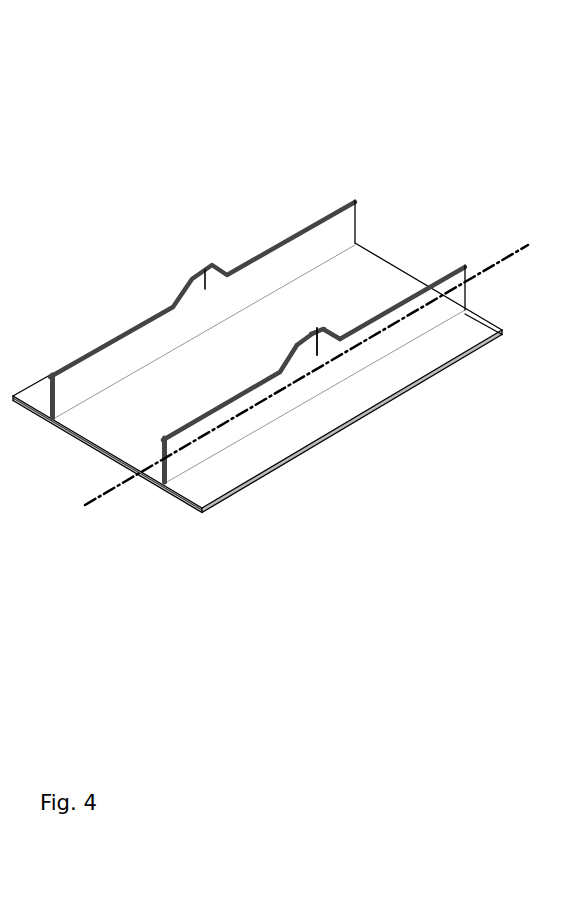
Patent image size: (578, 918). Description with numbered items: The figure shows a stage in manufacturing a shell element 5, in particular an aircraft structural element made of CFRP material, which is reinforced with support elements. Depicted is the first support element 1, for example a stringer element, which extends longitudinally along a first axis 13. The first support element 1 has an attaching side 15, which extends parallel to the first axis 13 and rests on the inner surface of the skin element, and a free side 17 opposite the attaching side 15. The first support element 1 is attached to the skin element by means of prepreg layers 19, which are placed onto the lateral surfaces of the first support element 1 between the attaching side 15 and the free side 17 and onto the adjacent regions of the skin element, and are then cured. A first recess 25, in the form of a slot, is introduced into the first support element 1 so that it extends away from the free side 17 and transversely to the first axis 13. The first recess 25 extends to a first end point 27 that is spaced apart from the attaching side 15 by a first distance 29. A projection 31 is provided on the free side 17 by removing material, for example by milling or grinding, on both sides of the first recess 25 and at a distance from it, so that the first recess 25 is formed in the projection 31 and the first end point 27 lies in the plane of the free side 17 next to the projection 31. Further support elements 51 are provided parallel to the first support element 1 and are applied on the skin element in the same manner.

The first support element 1 is at (273, 403).
The shell element 5 is at (132, 157).
The first axis 13 is at (127, 478).
The attaching side 15 is at (248, 435).
The free side 17 is at (208, 415).
The prepreg layers 19 is at (400, 328).
The first recess 25 is at (316, 343).
The first end point 27 is at (317, 355).
The first distance 29 is at (322, 373).
The projection 31 is at (305, 352).
The further support elements 51 is at (158, 343).